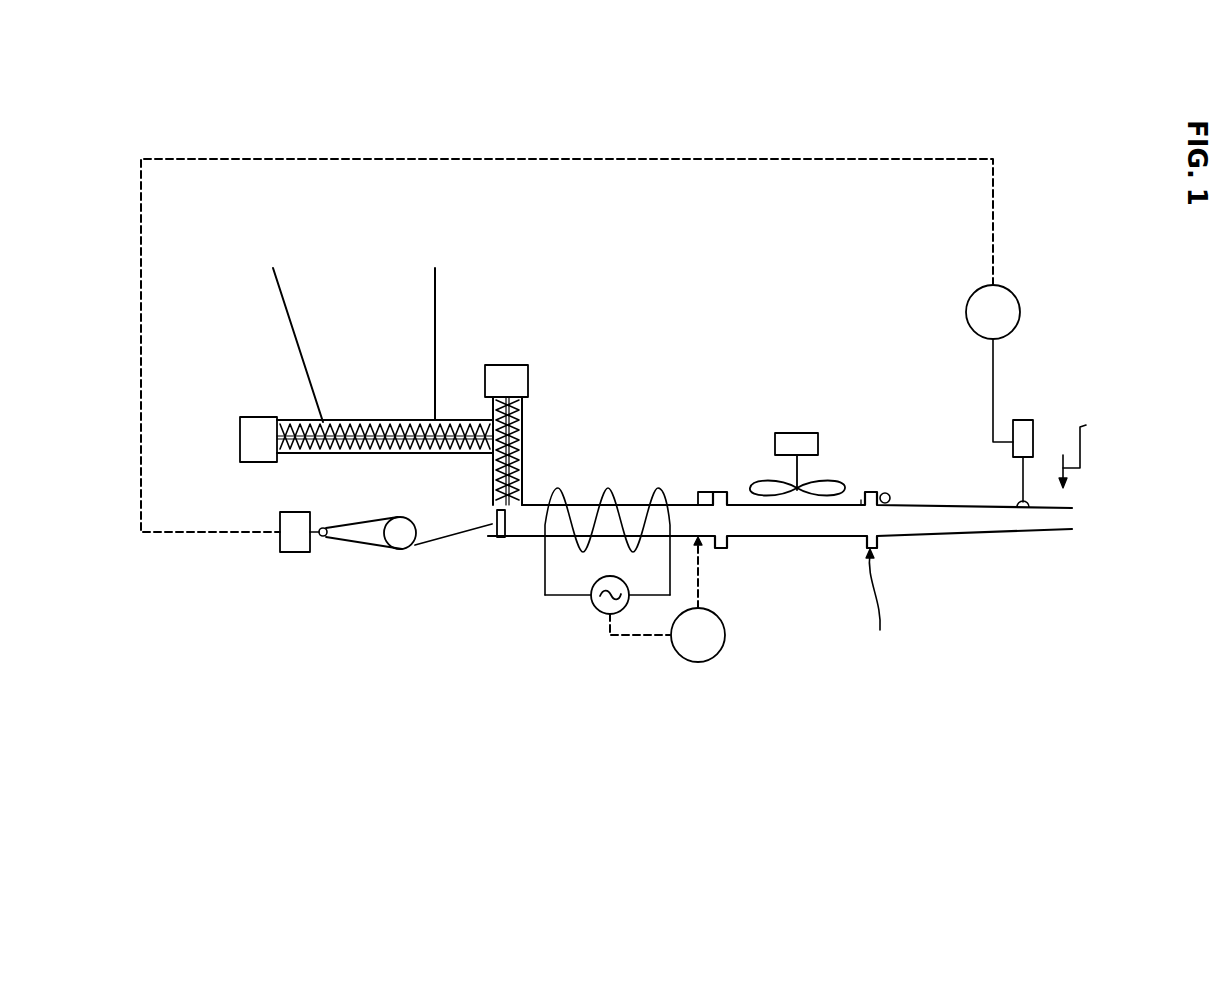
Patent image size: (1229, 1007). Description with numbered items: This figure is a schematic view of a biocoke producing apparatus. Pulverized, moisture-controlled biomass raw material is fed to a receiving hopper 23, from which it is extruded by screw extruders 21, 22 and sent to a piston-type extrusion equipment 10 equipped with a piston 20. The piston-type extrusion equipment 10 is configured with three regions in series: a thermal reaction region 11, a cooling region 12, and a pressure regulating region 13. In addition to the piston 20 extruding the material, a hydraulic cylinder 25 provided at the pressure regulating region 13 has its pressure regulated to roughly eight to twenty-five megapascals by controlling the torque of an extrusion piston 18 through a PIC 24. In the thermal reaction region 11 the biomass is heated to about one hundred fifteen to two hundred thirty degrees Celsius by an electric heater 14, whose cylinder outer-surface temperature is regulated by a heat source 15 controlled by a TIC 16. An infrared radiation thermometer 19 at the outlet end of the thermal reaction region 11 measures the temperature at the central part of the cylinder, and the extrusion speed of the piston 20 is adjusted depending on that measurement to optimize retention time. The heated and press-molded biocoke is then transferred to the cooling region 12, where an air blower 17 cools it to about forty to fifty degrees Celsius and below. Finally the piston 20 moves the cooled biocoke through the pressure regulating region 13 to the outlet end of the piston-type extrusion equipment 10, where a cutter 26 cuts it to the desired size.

The piston-type extrusion equipment 10 is at (893, 662).
The thermal reaction region 11 is at (680, 503).
The cooling region 12 is at (860, 503).
The pressure regulating region 13 is at (930, 505).
The electric heater 14 is at (605, 487).
The heat source 15 is at (598, 612).
The TIC (Thermistor Interface Controller) 16 is at (698, 662).
The air blower 17 is at (798, 432).
The extrusion piston 18 is at (885, 492).
The infrared radiation thermometer 19 is at (705, 492).
The piston 20 is at (509, 538).
The screw extruder 21 is at (290, 420).
The screw extruder 22 is at (528, 402).
The receiving hopper 23 is at (435, 293).
The PIC (pressure Interface Controller) 24 is at (1020, 312).
The hydraulic cylinder 25 is at (1018, 420).
The cutter 26 is at (1063, 455).